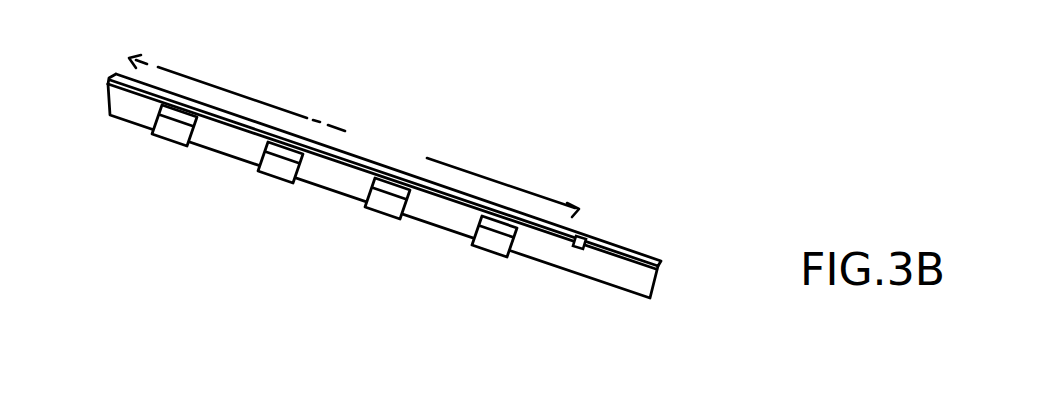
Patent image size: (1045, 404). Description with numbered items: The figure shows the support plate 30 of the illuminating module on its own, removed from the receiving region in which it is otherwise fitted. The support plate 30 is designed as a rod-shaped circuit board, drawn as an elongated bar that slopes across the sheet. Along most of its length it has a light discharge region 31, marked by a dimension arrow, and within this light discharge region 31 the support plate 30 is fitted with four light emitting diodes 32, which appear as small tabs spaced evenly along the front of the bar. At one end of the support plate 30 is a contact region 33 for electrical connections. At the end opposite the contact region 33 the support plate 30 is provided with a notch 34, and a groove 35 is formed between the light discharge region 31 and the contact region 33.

The support plate 30 is at (362, 194).
The light discharge region 31 is at (354, 136).
The light emitting diodes 32 is at (170, 133).
The contact region 33 is at (359, 194).
The notch 34 is at (112, 73).
The groove 35 is at (600, 225).